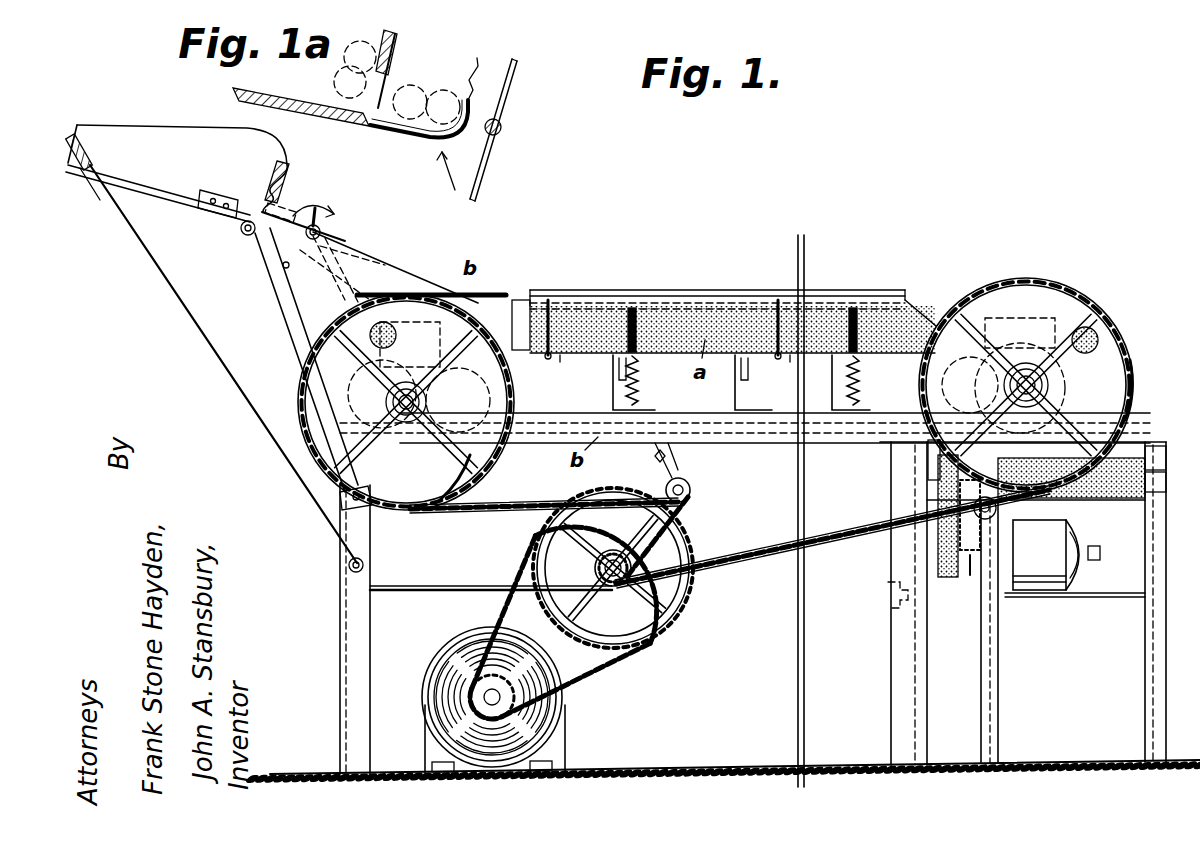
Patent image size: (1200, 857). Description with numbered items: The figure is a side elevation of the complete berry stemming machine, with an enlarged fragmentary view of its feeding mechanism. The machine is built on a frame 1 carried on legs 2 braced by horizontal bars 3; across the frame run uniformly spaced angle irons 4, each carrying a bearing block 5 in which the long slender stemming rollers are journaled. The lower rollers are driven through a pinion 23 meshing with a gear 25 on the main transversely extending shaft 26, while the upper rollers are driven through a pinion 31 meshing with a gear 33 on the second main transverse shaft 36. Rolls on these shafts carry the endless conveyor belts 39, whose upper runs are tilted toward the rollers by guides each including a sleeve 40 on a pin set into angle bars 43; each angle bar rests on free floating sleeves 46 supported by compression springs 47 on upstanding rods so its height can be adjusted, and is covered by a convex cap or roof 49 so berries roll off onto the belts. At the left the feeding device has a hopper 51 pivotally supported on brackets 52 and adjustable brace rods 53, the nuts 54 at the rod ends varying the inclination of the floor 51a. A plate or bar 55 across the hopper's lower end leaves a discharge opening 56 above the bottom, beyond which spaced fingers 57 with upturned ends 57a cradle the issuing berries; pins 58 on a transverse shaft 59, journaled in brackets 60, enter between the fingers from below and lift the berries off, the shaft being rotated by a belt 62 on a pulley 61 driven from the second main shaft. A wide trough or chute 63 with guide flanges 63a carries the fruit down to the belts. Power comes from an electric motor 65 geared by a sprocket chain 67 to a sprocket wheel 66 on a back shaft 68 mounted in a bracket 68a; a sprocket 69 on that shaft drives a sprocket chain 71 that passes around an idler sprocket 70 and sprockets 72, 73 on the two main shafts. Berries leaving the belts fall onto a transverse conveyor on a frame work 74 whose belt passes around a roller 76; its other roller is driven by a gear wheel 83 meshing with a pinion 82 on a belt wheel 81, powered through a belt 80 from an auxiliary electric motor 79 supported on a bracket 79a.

In FIG. 1, the frame 1 is at (397, 322).
In FIG. 1, the legs 2 is at (355, 656).
In FIG. 1, the horizontal bars 3 is at (888, 588).
In FIG. 1, the angle irons 4 is at (613, 395).
In FIG. 1, the bearing block 5 is at (617, 364).
In FIG. 1, the pinion 23 is at (1098, 333).
In FIG. 1, the gear 25 is at (1022, 322).
In FIG. 1, the main transversely extending shaft 26 is at (1045, 384).
In FIG. 1, the pinion 31 is at (338, 346).
In FIG. 1, the gear 33 is at (348, 394).
In FIG. 1, the second main transverse shaft 36 is at (406, 420).
In FIG. 1, the endless conveyor belts 39 is at (918, 298).
In FIG. 1, the tube or sleeve 40 is at (550, 357).
In FIG. 1, the angle bars 43 is at (705, 303).
In FIG. 1, the free floating sleeves 46 is at (640, 347).
In FIG. 1, the compression springs 47 is at (642, 388).
In FIG. 1, the convex cap or roof 49 is at (650, 292).
In FIG. 1, the hopper 51 is at (150, 128).
In FIG. 1A, the floor of the hopper 51a is at (318, 108).
In FIG. 1, the floor of the hopper 51a is at (170, 200).
In FIG. 1, the brackets 52 is at (292, 290).
In FIG. 1, the adjustable brace rods 53 is at (162, 276).
In FIG. 1, the nuts 54 is at (84, 172).
In FIG. 1A, the plate or bar 55 is at (398, 42).
In FIG. 1, the plate or bar 55 is at (290, 172).
In FIG. 1A, the discharge opening 56 is at (385, 85).
In FIG. 1A, the spaced fingers 57 is at (420, 133).
In FIG. 1, the spaced fingers 57 is at (292, 212).
In FIG. 1A, the upturned ends 57a is at (489, 67).
In FIG. 1A, the pins 58 is at (507, 96).
In FIG. 1A, the transverse shaft 59 is at (502, 127).
In FIG. 1, the brackets 60 is at (235, 225).
In FIG. 1, the pulley 61 is at (325, 230).
In FIG. 1, the belt 62 is at (362, 262).
In FIG. 1, the trough or chute 63 is at (400, 285).
In FIG. 1, the guide flanges 63a is at (516, 306).
In FIG. 1, the electric motor 65 is at (562, 718).
In FIG. 1, the sprocket wheel 66 is at (605, 640).
In FIG. 1, the sprocket chain 67 is at (500, 607).
In FIG. 1, the back shaft 68 is at (594, 568).
In FIG. 1, the bracket 68a is at (478, 588).
In FIG. 1, the sprocket 69 is at (613, 552).
In FIG. 1, the idler sprocket 70 is at (692, 490).
In FIG. 1, the sprocket chain 71 is at (505, 505).
In FIG. 1, the sprocket 72 is at (492, 462).
In FIG. 1, the sprocket 73 is at (1125, 393).
In FIG. 1, the frame work 74 is at (995, 665).
In FIG. 1, the roller 76 is at (1120, 500).
In FIG. 1, the auxiliary electric motor 79 is at (1056, 555).
In FIG. 1, the bracket 79a is at (1085, 598).
In FIG. 1, the belt 80 is at (940, 545).
In FIG. 1, the belt wheel 81 is at (935, 462).
In FIG. 1, the pinion 82 is at (960, 490).
In FIG. 1, the gear wheel 83 is at (972, 560).